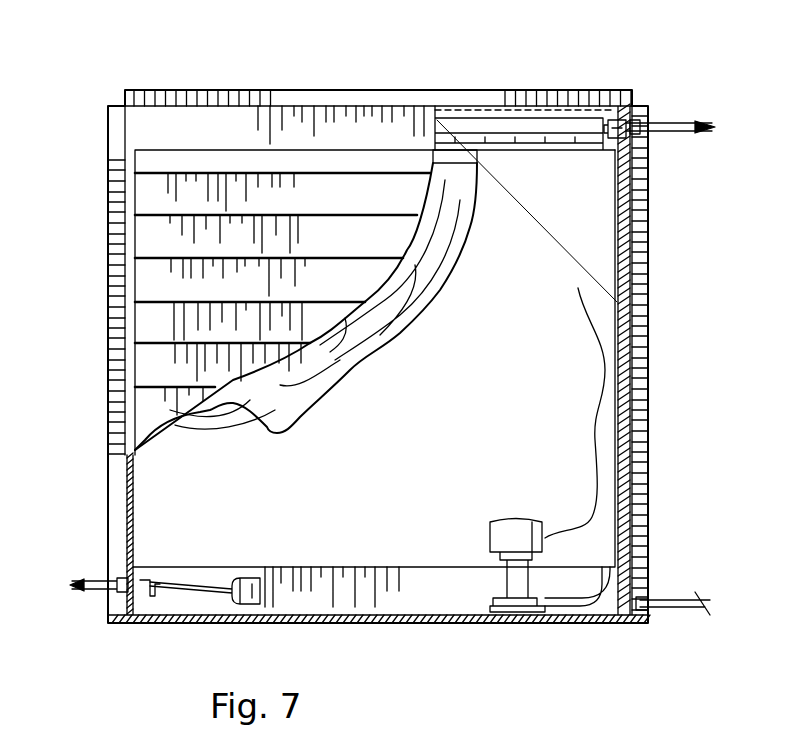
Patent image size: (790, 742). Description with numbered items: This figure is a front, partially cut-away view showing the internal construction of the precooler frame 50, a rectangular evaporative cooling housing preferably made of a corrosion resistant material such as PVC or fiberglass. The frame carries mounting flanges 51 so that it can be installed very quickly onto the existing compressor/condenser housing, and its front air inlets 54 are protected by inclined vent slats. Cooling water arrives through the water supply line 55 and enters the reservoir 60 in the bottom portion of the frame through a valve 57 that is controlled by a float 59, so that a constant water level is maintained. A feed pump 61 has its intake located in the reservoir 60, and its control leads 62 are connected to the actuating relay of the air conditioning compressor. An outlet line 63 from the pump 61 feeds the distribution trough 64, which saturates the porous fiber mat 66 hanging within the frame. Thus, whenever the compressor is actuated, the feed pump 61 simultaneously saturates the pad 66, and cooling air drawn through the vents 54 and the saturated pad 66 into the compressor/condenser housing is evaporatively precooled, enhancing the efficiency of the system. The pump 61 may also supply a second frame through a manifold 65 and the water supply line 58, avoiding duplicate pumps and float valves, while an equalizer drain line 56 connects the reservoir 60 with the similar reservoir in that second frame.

The evaporative cooling housing 50 is at (263, 122).
The mounting flange 51 is at (175, 98).
The front air inlet 54 is at (162, 245).
The water supply line 55 is at (93, 577).
The equalizer drain line 56 is at (677, 608).
The valve 57 is at (155, 580).
The water supply line 58 is at (682, 120).
The float 59 is at (207, 580).
The reservoir 60 is at (405, 587).
The feed pump 61 is at (512, 533).
The control leads 62 is at (595, 410).
The outlet line 63 is at (617, 542).
The distribution trough 64 is at (482, 128).
The manifold 65 is at (620, 125).
The porous fiber mat 66 is at (340, 370).